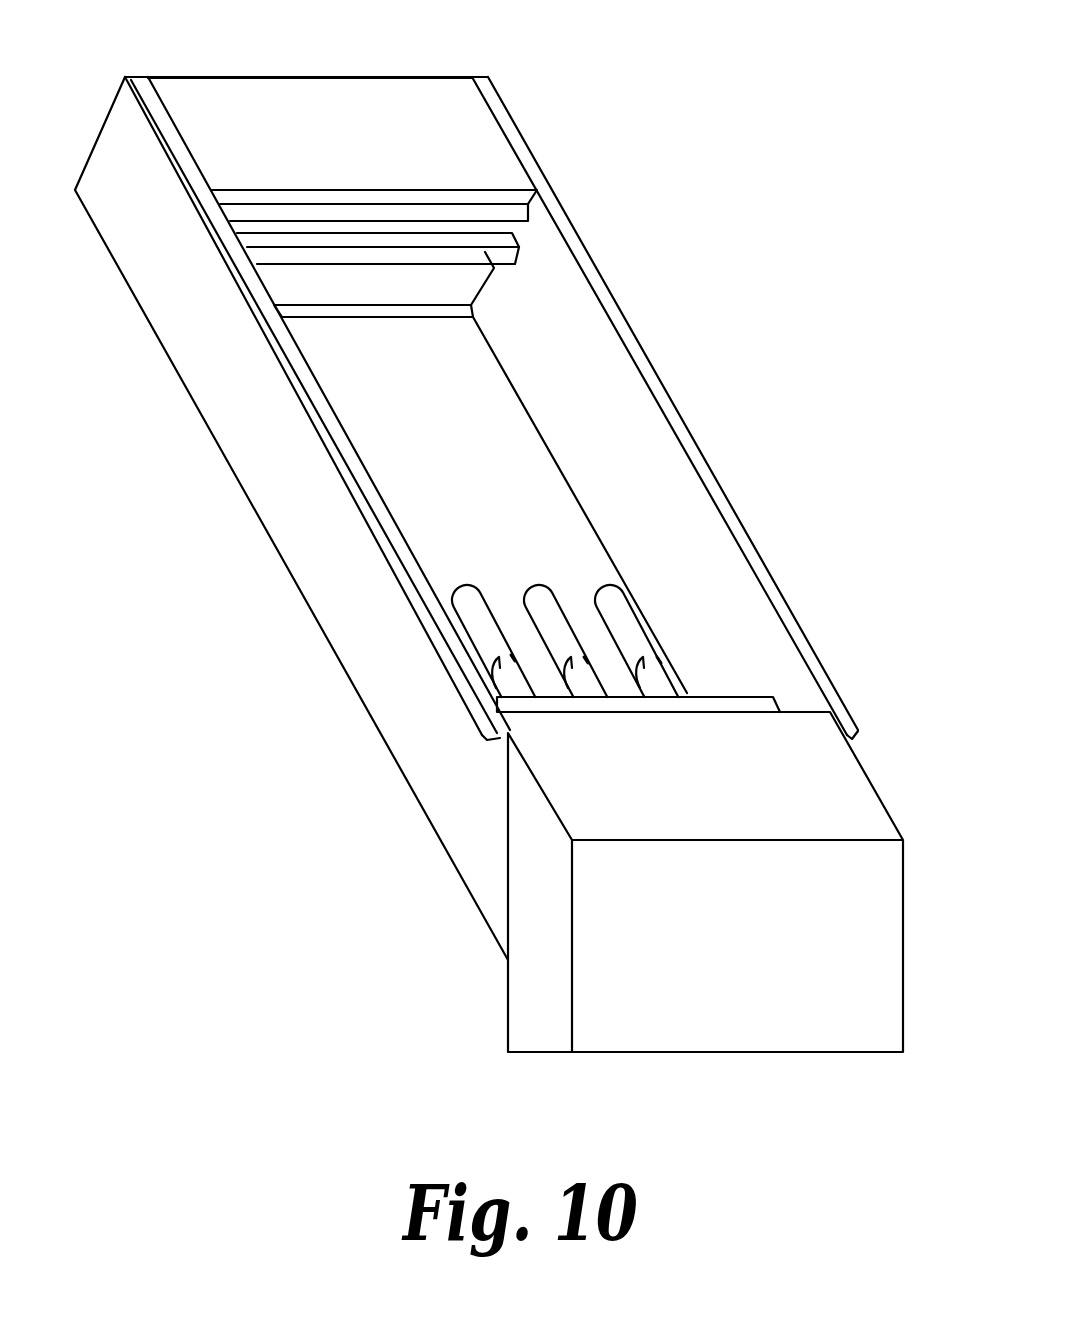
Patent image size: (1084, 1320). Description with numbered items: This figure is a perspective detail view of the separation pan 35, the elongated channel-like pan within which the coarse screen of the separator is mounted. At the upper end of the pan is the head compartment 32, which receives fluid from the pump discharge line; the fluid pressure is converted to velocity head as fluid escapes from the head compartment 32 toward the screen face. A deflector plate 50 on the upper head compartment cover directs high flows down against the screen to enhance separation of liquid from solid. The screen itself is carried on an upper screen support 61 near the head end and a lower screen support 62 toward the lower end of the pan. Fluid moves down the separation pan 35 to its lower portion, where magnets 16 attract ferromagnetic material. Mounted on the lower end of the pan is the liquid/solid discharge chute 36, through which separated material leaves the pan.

The magnets 16 is at (600, 588).
The head compartment 32 is at (382, 125).
The separation pan 35 is at (612, 190).
The liquid/solid discharge chute 36 is at (690, 975).
The deflector plate 50 is at (282, 212).
The upper screen support 61 is at (494, 268).
The lower screen support 62 is at (720, 697).